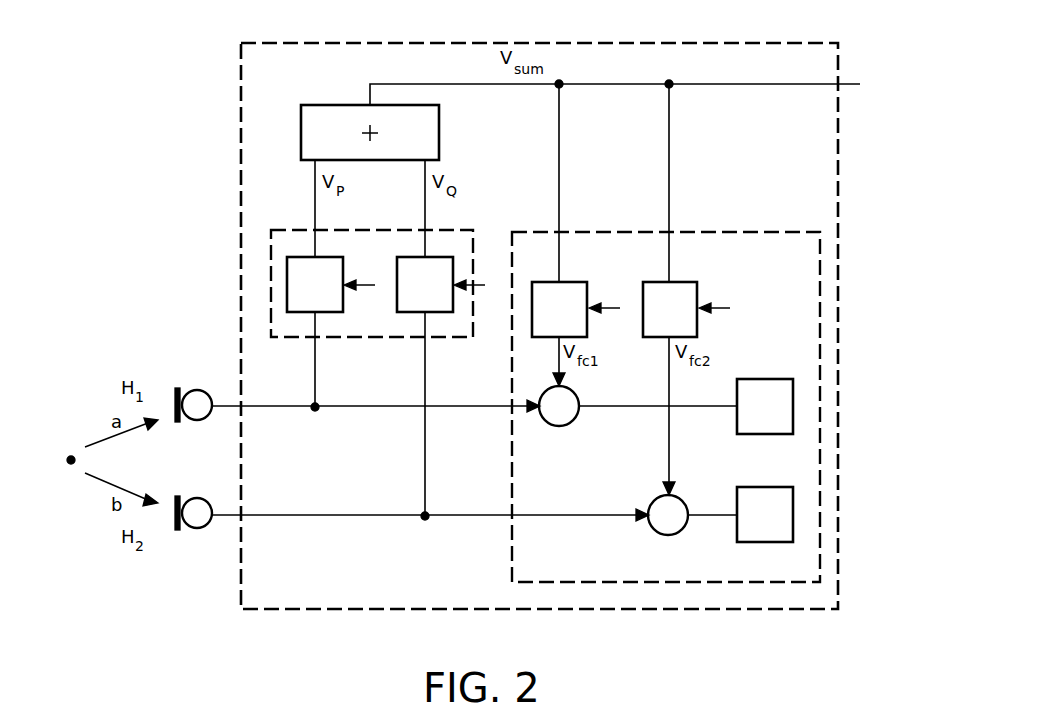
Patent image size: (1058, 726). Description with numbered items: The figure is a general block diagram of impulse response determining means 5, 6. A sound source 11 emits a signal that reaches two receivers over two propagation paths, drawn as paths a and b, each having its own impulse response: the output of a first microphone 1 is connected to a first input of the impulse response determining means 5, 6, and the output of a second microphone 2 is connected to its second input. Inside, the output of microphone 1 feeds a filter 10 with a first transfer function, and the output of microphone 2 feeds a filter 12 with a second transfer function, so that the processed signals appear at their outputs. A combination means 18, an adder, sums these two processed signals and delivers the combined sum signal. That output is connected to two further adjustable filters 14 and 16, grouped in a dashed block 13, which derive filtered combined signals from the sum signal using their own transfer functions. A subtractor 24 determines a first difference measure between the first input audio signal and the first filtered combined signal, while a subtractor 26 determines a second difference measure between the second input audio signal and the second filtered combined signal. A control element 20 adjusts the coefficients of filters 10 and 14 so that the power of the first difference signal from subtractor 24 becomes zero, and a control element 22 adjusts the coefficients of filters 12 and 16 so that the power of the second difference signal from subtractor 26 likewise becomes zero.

The microphone 1 is at (195, 390).
The microphone 2 is at (195, 530).
The impulse response determining means 5 is at (495, 326).
The impulse response determining means 6 is at (240, 95).
The filter 10 is at (299, 306).
The sound source 11 is at (71, 455).
The filter 12 is at (409, 306).
The feedback compensation circuit 13 is at (505, 562).
The further adjustable filter 14 is at (587, 282).
The further adjustable filter 16 is at (697, 282).
The combination means 18 is at (322, 110).
The control element 20 is at (759, 379).
The control element 22 is at (758, 542).
The subtractor 24 is at (573, 421).
The subtractor 26 is at (652, 500).